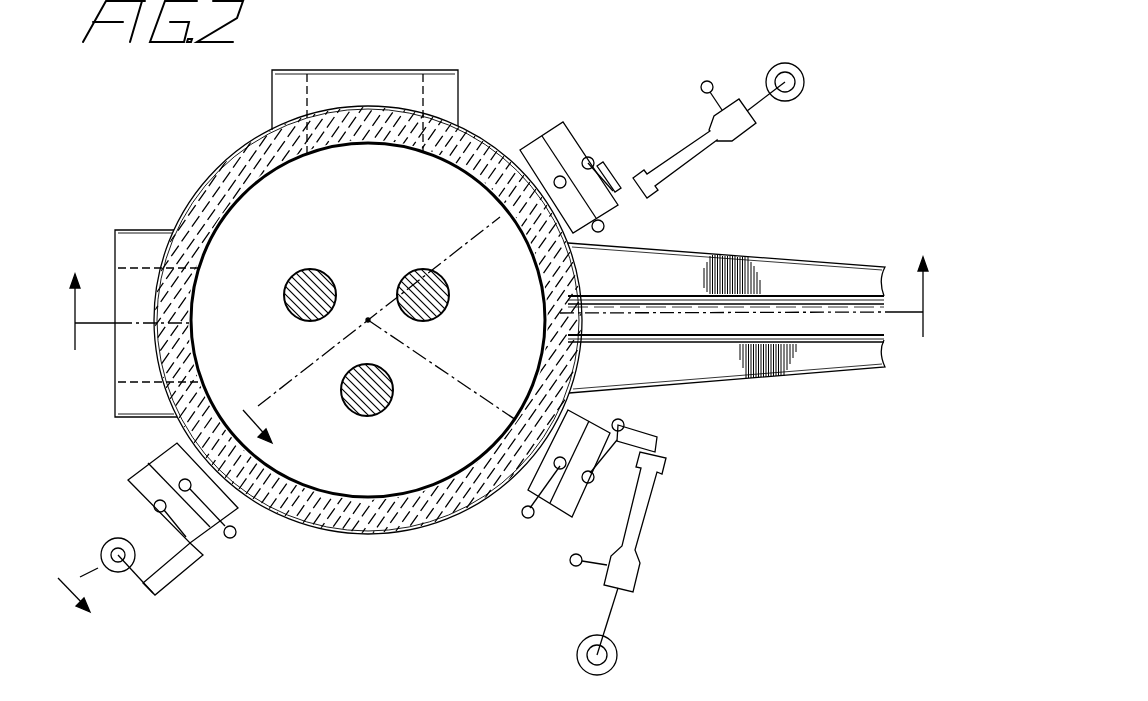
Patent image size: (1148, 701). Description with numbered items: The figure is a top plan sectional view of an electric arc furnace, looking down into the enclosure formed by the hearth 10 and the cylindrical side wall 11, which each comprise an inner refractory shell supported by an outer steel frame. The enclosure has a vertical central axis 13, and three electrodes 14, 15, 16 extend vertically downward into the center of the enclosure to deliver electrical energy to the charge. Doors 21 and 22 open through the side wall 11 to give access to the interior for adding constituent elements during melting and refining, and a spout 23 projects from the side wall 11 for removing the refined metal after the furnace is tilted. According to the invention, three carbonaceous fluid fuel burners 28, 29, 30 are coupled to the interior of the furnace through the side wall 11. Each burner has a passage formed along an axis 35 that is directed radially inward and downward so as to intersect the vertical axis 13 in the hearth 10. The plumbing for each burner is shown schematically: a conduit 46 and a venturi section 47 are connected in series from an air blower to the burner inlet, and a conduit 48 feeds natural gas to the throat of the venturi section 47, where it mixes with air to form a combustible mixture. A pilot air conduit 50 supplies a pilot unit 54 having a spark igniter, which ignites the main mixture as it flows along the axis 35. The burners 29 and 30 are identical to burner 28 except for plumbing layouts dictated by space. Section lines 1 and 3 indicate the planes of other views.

The section line 1- 1 is at (494, 302).
The section line 3- 3 is at (174, 525).
The hearth 10 is at (458, 172).
The cylindrical side wall 11 is at (237, 150).
The vertical central axis 13 is at (368, 320).
The electrode 14 is at (288, 290).
The electrode 15 is at (448, 301).
The electrode 16 is at (368, 416).
The door 21 is at (152, 306).
The door 22 is at (383, 104).
The spout 23 is at (657, 313).
The carbonaceous fluid fuel burner 28 is at (207, 530).
The carbonaceous fluid fuel burner 29 is at (573, 416).
The carbonaceous fluid fuel burner 30 is at (535, 143).
The axis 35 is at (487, 232).
The conduit 46 is at (608, 172).
The venturi section 47 is at (713, 147).
The conduit 48 is at (713, 87).
The pilot air conduit 50 is at (604, 226).
The pilot unit 54 is at (561, 176).